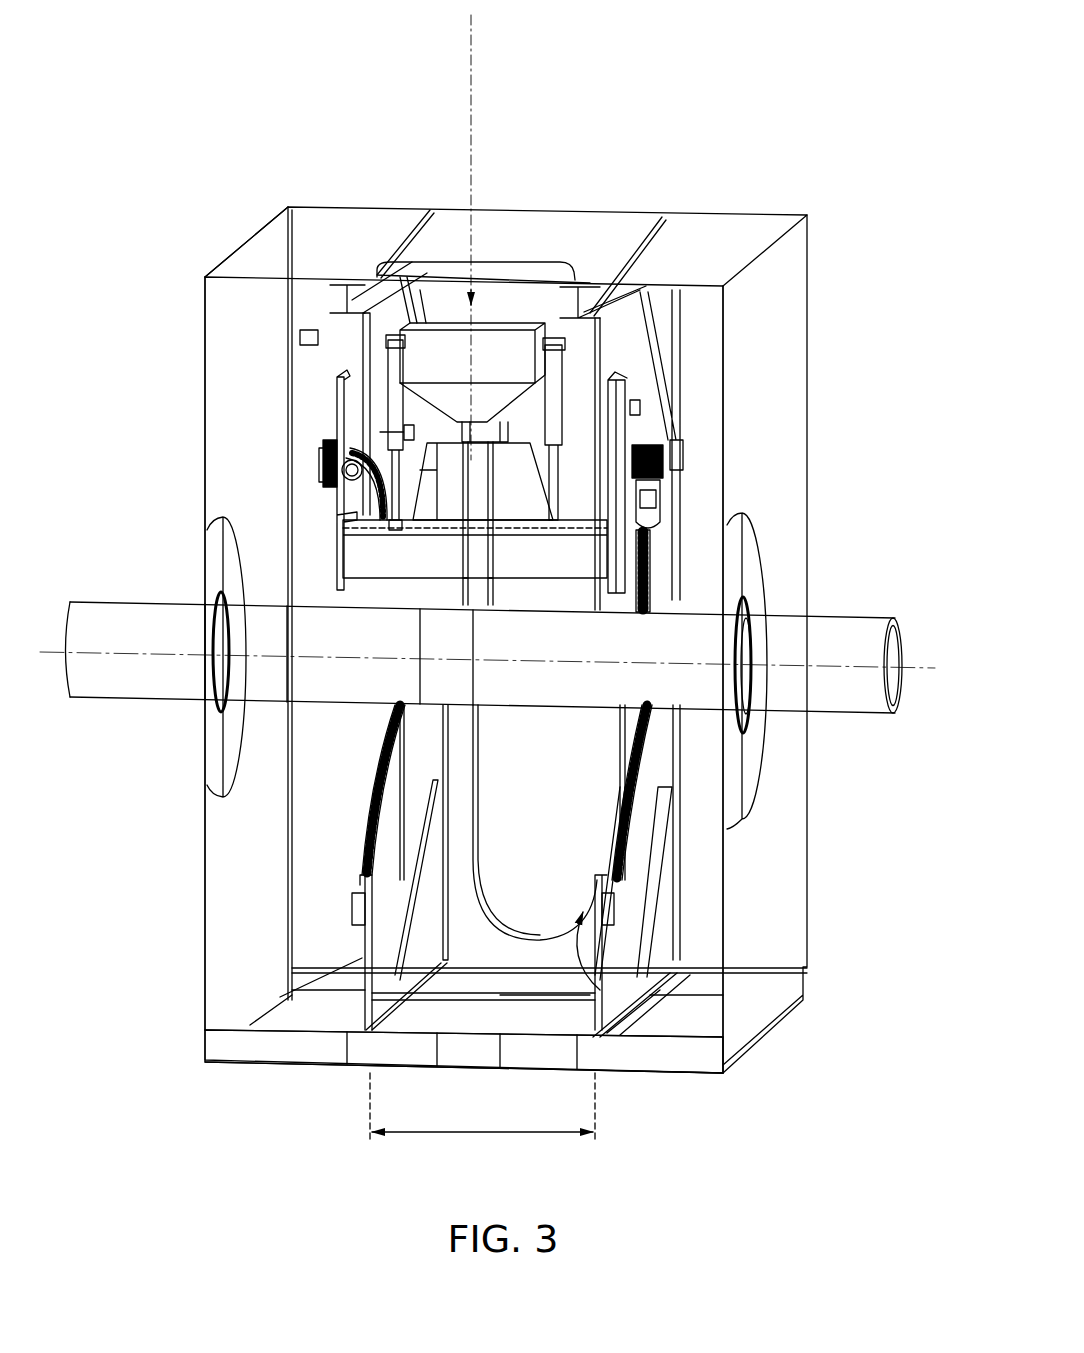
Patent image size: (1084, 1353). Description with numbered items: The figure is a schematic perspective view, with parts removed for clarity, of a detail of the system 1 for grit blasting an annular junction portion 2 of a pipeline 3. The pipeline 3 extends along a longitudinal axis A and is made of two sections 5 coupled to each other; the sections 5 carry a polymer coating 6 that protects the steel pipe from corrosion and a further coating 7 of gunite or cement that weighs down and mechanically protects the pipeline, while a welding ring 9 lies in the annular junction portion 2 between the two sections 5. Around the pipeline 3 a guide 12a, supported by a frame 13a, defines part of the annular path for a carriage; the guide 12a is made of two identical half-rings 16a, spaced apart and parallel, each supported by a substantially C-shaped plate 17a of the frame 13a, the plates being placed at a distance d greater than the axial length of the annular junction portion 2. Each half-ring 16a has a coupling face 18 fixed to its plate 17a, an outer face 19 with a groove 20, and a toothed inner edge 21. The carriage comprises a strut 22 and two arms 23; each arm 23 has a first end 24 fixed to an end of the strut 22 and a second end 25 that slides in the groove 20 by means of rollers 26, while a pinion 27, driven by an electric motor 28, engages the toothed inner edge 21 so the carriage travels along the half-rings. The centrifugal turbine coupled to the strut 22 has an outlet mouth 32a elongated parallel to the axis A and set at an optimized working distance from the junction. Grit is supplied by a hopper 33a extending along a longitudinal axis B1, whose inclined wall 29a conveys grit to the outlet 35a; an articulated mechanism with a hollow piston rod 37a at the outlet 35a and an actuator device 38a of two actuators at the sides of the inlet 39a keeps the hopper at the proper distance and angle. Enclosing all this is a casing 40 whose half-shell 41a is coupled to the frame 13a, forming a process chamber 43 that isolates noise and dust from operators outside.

The system 1 is at (835, 137).
The annular junction portion 2 is at (514, 716).
The pipeline 3 is at (862, 715).
The sections 5 is at (340, 696).
The polymer coating 6 is at (893, 707).
The further coating 7 is at (893, 623).
The welding ring 9 is at (490, 698).
The guide 12a is at (310, 340).
The frame 13a is at (693, 425).
The half-rings 16a is at (358, 922).
The plates 17a is at (393, 312).
The coupling face 18 is at (643, 1040).
The outer face 19 is at (628, 938).
The groove 20 is at (352, 912).
The toothed inner edge 21 is at (373, 800).
The strut 22 is at (650, 570).
The arms 23 is at (410, 433).
The first end 24 is at (248, 605).
The second end 25 is at (340, 360).
The rollers 26 is at (626, 366).
The pinion 27 is at (330, 490).
The electric motor 28 is at (328, 470).
The inclined wall 29a is at (520, 265).
The outlet mouth 32a is at (642, 727).
The hopper 33a is at (500, 395).
The outlet 35a is at (340, 380).
The piston rod 37a is at (345, 503).
The actuator device 38a is at (390, 400).
The inlet 39a is at (488, 347).
The casing 40 is at (383, 178).
The half-shell 41a is at (247, 232).
The process chamber 43 is at (240, 968).
The longitudinal axis A is at (920, 668).
The longitudinal axis B1 is at (480, 35).
The distance d is at (490, 1133).